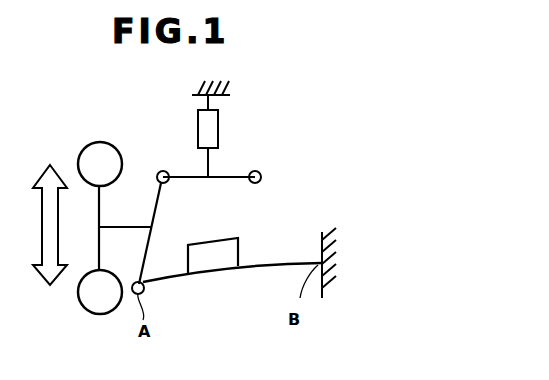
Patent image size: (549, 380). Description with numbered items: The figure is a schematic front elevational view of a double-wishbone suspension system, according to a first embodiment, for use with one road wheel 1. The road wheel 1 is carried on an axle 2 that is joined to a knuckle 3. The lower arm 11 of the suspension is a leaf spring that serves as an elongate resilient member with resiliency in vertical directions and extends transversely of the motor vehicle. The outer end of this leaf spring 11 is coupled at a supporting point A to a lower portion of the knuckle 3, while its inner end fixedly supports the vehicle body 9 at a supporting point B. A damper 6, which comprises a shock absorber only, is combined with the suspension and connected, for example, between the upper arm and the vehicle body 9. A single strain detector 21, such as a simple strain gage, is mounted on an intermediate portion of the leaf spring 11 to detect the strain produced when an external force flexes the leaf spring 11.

The road wheel 1 is at (86, 142).
The axle 2 is at (120, 227).
The knuckle 3 is at (155, 208).
The damper 6 is at (219, 122).
The vehicle body 9 is at (207, 75).
The lower arm 11 is at (295, 263).
The strain detector 21 is at (237, 238).